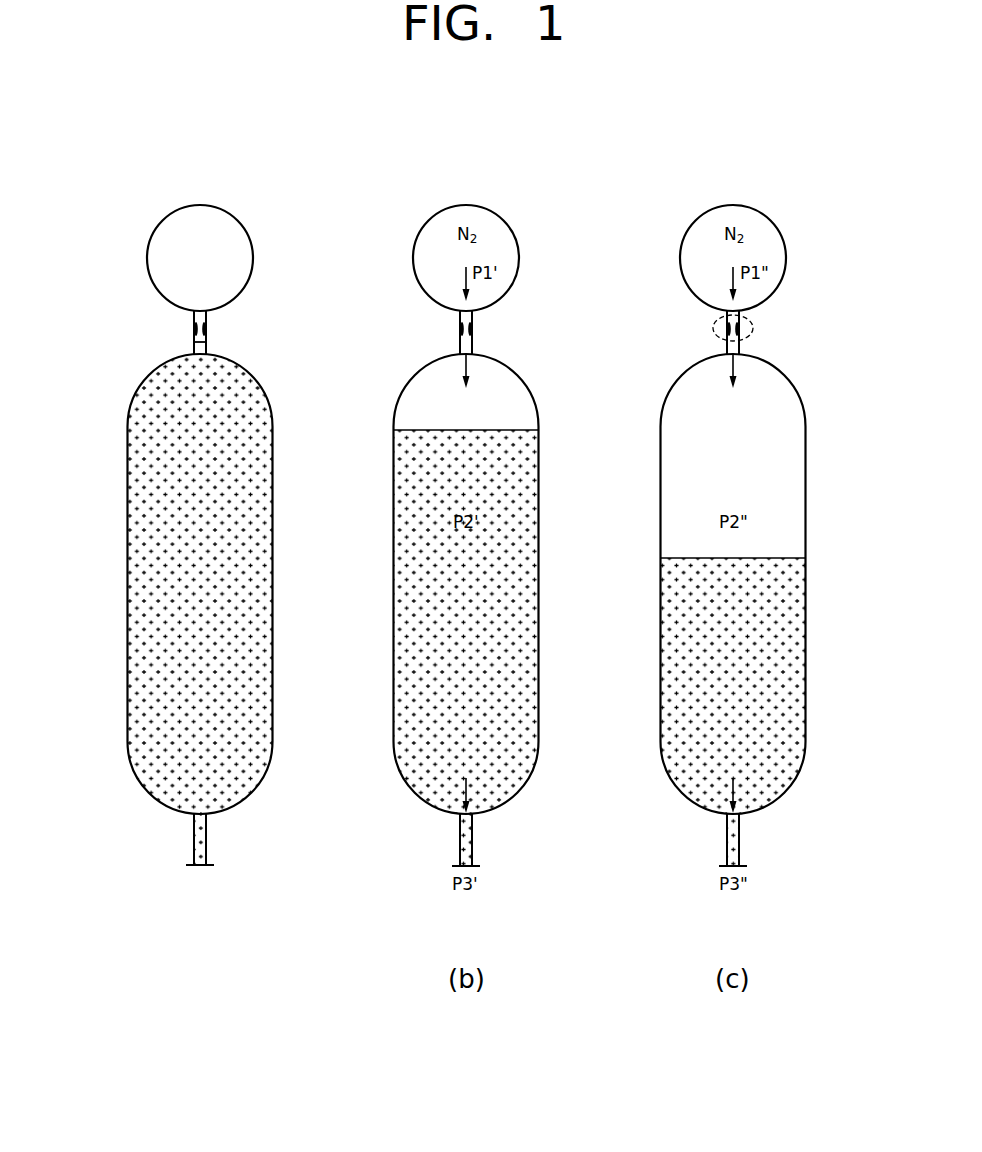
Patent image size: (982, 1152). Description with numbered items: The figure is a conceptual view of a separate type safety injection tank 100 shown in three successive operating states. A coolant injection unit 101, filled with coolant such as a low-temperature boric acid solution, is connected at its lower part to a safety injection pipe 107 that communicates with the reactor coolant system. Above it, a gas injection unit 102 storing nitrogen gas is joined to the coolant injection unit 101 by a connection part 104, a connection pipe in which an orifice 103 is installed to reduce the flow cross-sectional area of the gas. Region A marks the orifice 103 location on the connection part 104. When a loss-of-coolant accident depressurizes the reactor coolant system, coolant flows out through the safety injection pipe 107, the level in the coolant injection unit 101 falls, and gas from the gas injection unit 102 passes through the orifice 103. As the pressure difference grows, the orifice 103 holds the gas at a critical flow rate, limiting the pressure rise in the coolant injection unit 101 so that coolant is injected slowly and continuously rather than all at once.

The separate type safety injection tank 100 is at (542, 161).
The coolant injection unit 101 is at (127, 500).
The gas injection unit 102 is at (147, 258).
The orifice 103 is at (194, 328).
The connection part 104 is at (207, 342).
The safety injection pipe 107 is at (194, 838).
The enlarged region A is at (753, 328).